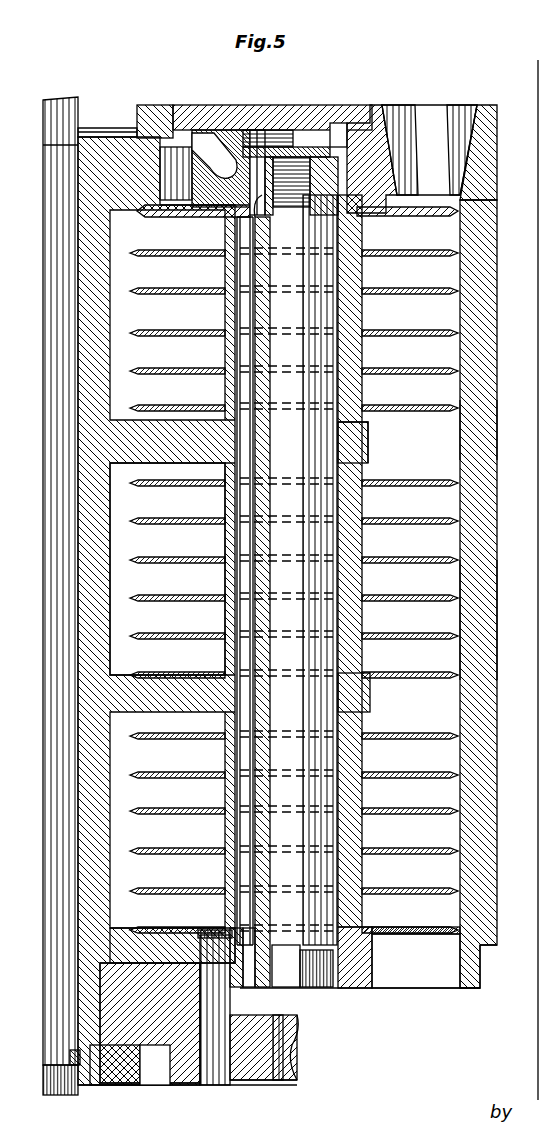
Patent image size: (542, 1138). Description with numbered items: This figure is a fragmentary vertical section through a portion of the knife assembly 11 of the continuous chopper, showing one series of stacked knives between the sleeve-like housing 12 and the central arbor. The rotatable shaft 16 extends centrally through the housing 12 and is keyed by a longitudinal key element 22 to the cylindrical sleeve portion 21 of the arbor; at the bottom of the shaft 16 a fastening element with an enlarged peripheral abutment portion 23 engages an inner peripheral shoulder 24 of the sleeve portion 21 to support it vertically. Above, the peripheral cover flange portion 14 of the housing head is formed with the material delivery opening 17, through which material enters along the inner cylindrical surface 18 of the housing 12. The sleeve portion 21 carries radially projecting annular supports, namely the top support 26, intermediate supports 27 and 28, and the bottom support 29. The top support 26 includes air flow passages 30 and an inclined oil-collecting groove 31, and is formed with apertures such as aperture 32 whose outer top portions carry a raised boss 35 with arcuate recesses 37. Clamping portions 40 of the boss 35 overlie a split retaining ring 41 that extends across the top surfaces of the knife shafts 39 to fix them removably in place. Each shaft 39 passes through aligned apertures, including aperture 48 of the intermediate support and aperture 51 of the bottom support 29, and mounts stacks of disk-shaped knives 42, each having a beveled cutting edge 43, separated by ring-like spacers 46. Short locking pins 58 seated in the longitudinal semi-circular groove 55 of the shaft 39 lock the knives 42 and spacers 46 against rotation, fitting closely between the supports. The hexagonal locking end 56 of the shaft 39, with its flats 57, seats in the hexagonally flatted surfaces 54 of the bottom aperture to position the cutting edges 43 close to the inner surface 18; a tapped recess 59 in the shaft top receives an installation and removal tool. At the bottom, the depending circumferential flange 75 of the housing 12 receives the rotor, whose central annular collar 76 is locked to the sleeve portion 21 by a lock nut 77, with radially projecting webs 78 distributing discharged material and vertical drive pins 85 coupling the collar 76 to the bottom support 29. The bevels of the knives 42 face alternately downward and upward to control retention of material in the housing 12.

The knife assembly 11 is at (452, 446).
The housing 12 is at (485, 492).
The peripheral cover flange portion 14 is at (330, 115).
The rotatable shaft 16 is at (62, 97).
The material delivery opening 17 is at (460, 120).
The inner cylindrical surface 18 is at (450, 612).
The sleeve portion 21 is at (95, 506).
The key element 22 is at (73, 400).
The enlarged peripheral abutment portion 23 is at (57, 1092).
The inner peripheral shoulder 24 is at (72, 1068).
The top support 26 is at (210, 135).
The intermediate support 27 is at (375, 428).
The intermediate support 28 is at (370, 695).
The bottom support 29 is at (180, 940).
The air flow passages 30 is at (172, 150).
The groove 31 is at (184, 160).
The aperture 32 is at (255, 130).
The raised boss 35 is at (397, 118).
The arcuate recesses 37 is at (372, 130).
The shaft 39 is at (325, 447).
The clamping portions 40 is at (285, 147).
The retaining ring 41 is at (265, 147).
The knife 42 is at (211, 250).
The beveled cutting edge 43 is at (450, 216).
The spacer 46 is at (363, 272).
The aperture 48 is at (250, 440).
The aperture 51 is at (338, 950).
The flatted surfaces 54 is at (330, 975).
The semi-circular groove 55 is at (252, 577).
The hexagonal locking end 56 is at (315, 988).
The flats 57 is at (280, 975).
The locking pins 58 is at (233, 268).
The tapped recess 59 is at (345, 175).
The depending circumferential flange 75 is at (478, 975).
The central annular collar 76 is at (115, 963).
The lock nut 77 is at (120, 1085).
The webs 78 is at (283, 1080).
The drive pins 85 is at (215, 1080).